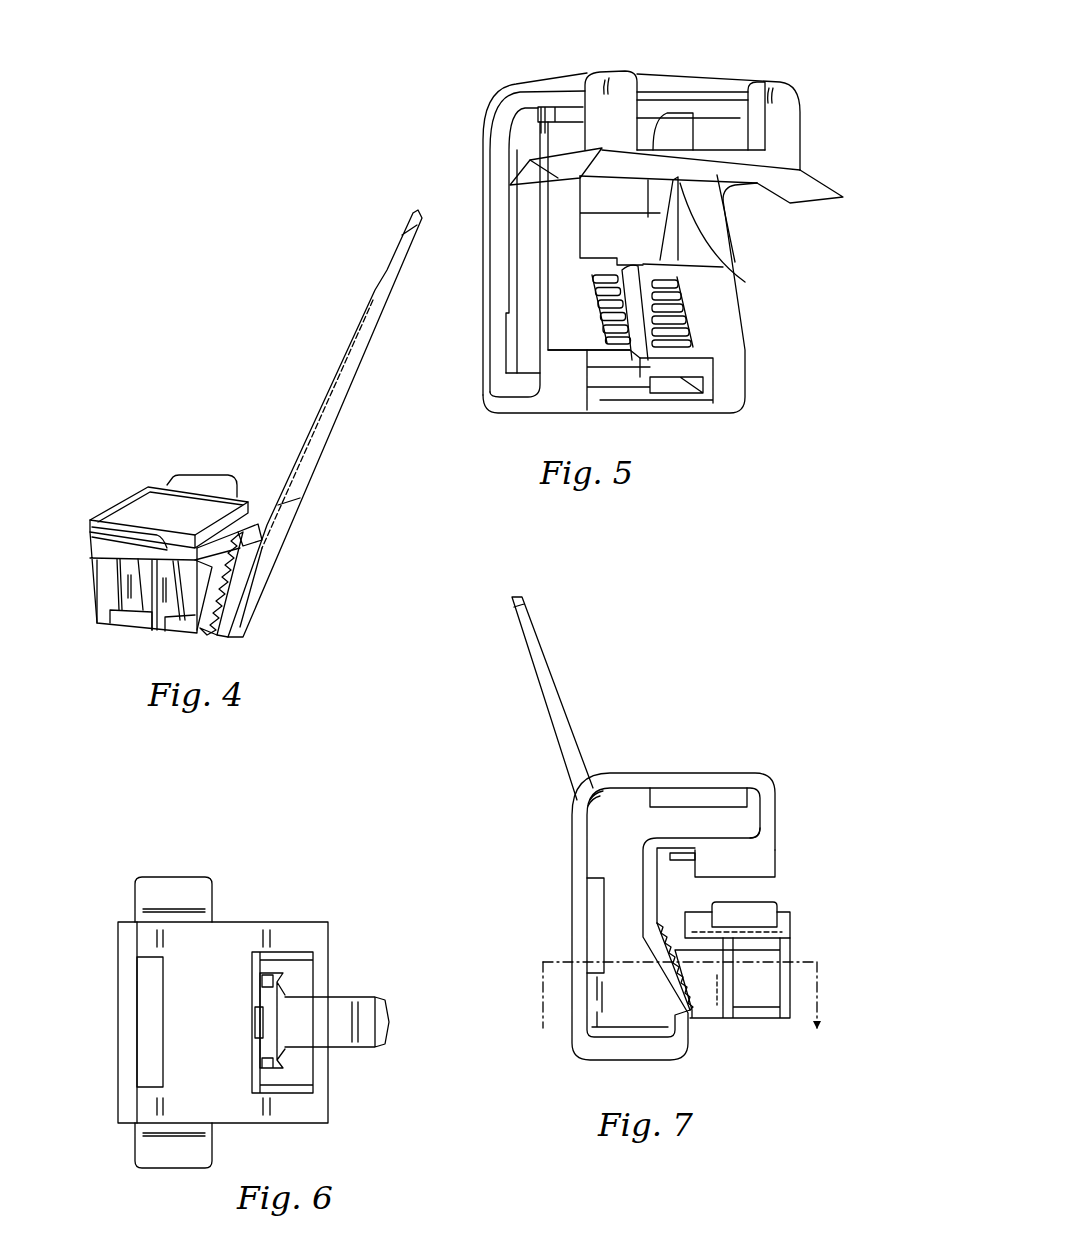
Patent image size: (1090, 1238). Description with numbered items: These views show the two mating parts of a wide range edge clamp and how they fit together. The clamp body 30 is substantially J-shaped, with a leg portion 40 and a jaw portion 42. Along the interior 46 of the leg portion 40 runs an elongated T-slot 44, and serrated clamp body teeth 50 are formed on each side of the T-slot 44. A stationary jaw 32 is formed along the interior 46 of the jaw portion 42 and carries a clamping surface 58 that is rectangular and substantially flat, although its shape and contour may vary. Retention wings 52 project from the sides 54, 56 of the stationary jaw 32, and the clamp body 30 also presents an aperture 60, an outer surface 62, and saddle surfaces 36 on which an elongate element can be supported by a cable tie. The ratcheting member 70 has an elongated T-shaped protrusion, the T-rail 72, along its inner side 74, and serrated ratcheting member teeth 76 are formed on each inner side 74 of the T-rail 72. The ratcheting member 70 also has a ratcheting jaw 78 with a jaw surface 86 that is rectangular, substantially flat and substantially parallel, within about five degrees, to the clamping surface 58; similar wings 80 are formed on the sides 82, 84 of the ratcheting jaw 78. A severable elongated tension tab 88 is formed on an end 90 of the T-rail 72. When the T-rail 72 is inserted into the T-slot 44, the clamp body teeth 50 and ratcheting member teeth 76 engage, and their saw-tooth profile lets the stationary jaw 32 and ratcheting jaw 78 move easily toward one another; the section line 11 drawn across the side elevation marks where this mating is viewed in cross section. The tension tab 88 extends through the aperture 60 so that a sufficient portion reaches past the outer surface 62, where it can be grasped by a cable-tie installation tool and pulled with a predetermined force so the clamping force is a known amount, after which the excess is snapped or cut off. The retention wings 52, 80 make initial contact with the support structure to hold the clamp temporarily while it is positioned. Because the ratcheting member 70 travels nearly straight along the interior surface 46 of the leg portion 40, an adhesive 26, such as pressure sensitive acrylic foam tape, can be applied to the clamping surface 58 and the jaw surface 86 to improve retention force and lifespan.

In FIG. 5, the clamp body 30 is at (533, 45).
In FIG. 6, the clamp body 30 is at (233, 947).
In FIG. 7, the clamp body 30 is at (617, 857).
In FIG. 5, the jaw portion 42 is at (563, 133).
In FIG. 5, the side of the stationary jaw 54 is at (553, 153).
In FIG. 7, the side of the stationary jaw 54 is at (750, 843).
In FIG. 5, the retention wings 52 is at (533, 177).
In FIG. 6, the retention wings 52 is at (183, 875).
In FIG. 7, the retention wings 52 is at (767, 865).
In FIG. 5, the side of the stationary jaw 56 is at (800, 133).
In FIG. 5, the stationary jaw 32 is at (717, 173).
In FIG. 5, the clamping surface 58 is at (630, 203).
In FIG. 5, the aperture 60 is at (678, 190).
In FIG. 6, the aperture 60 is at (283, 977).
In FIG. 5, the interior 46 is at (723, 330).
In FIG. 5, the leg portion 40 is at (518, 328).
In FIG. 5, the clamp body teeth 50 is at (687, 302).
In FIG. 7, the clamp body teeth 50 is at (680, 977).
In FIG. 5, the T-slot 44 is at (643, 360).
In FIG. 4, the ratcheting member 70 is at (150, 388).
In FIG. 7, the ratcheting member 70 is at (758, 982).
In FIG. 4, the adhesive 26 is at (150, 495).
In FIG. 4, the ratcheting jaw 78 is at (130, 508).
In FIG. 4, the jaw surface 86 is at (172, 487).
In FIG. 4, the wings 80 is at (195, 475).
In FIG. 7, the wings 80 is at (763, 907).
In FIG. 4, the side of the ratcheting jaw 82 is at (90, 540).
In FIG. 4, the side of the ratcheting jaw 84 is at (258, 522).
In FIG. 7, the side of the ratcheting jaw 84 is at (792, 928).
In FIG. 4, the tension tab 88 is at (372, 290).
In FIG. 6, the tension tab 88 is at (338, 993).
In FIG. 7, the tension tab 88 is at (552, 717).
In FIG. 4, the end of the T-rail 90 is at (290, 523).
In FIG. 4, the inner side 74 is at (262, 548).
In FIG. 4, the T-rail 72 is at (255, 598).
In FIG. 4, the ratcheting member teeth 76 is at (232, 618).
In FIG. 7, the ratcheting member teeth 76 is at (673, 966).
In FIG. 6, the saddle surface 36 is at (182, 1015).
In FIG. 6, the outer surface 62 is at (202, 1078).
In FIG. 7, the outer surface 62 is at (687, 772).
In FIG. 7, the section line 11- 11 is at (682, 1008).